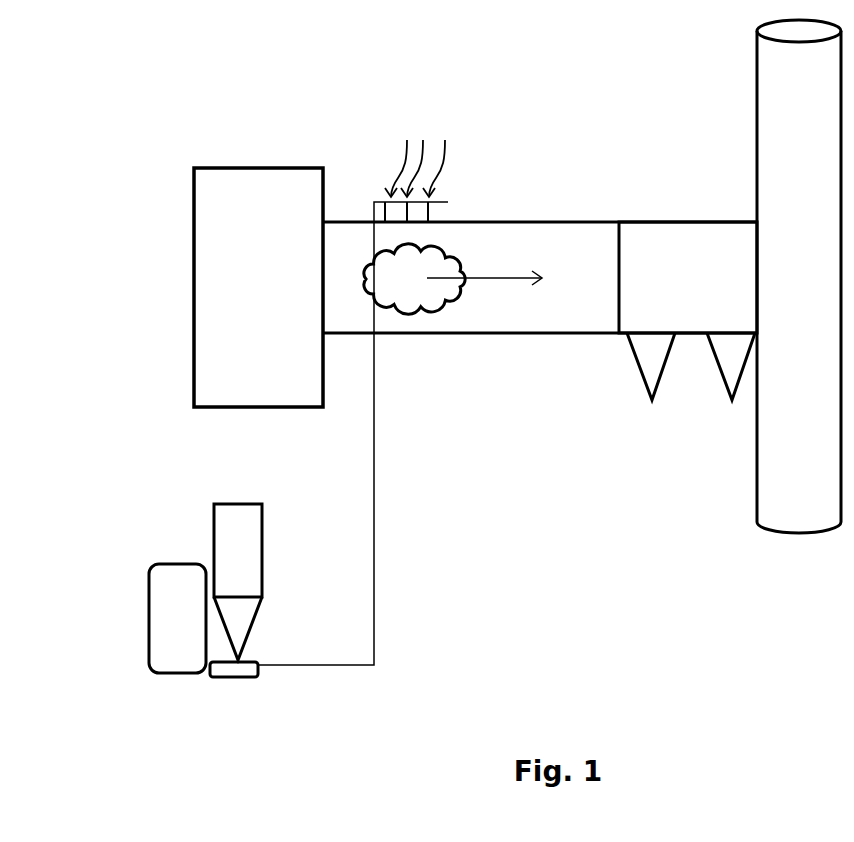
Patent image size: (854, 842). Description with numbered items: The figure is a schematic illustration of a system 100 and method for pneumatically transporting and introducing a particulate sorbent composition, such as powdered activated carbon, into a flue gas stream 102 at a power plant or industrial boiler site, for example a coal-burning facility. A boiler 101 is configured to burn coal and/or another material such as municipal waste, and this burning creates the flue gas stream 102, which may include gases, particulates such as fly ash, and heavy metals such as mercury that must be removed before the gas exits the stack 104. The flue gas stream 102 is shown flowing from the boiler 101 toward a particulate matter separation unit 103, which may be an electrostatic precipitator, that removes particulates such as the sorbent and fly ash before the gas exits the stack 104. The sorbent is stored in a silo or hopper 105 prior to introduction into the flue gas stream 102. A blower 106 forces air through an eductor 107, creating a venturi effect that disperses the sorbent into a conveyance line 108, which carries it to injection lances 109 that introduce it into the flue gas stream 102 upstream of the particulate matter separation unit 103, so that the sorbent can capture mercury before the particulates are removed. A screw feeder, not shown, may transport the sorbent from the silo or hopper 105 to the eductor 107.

The system 100 is at (178, 149).
The boiler 101 is at (282, 266).
The flue gas stream 102 is at (453, 279).
The particulate matter separation unit 103 is at (707, 291).
The stack 104 is at (819, 192).
The silo or hopper 105 is at (262, 523).
The blower 106 is at (147, 621).
The eductor 107 is at (233, 677).
The conveyance line 108 is at (374, 623).
The injection lances 109 is at (420, 151).